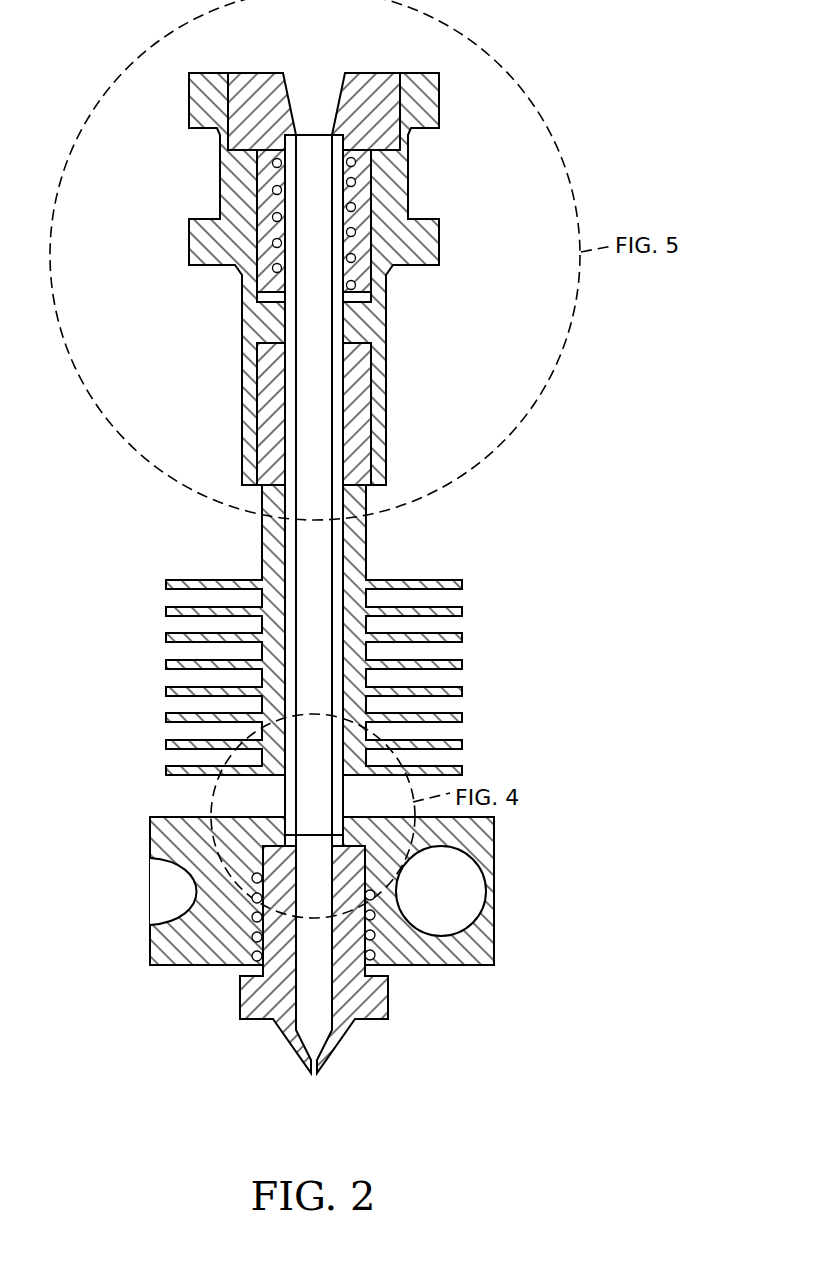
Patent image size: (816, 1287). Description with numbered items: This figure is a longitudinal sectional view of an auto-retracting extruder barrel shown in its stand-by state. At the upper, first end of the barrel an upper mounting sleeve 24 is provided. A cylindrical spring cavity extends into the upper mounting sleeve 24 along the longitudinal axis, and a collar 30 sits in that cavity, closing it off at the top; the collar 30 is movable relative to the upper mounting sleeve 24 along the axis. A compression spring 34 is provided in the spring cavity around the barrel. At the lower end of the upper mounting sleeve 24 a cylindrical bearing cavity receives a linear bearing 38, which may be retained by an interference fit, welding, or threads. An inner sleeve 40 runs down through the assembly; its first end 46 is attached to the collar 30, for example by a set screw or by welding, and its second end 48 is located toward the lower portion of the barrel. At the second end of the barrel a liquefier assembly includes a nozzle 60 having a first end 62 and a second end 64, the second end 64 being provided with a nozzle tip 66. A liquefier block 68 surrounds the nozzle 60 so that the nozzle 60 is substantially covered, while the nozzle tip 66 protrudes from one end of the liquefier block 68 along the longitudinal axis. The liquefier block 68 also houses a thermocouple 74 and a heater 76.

The upper mounting sleeve 24 is at (417, 85).
The collar 30 is at (262, 82).
The compression spring 34 is at (277, 217).
The linear bearing 38 is at (273, 371).
The inner sleeve 40 is at (310, 548).
The first end of the inner sleeve 46 is at (308, 58).
The second end of the inner sleeve 48 is at (437, 838).
The nozzle 60 is at (315, 1013).
The first end of the nozzle 62 is at (447, 846).
The second end of the nozzle 64 is at (375, 1058).
The nozzle tip 66 is at (297, 1048).
The liquefier block 68 is at (167, 938).
The thermocouple 74 is at (172, 888).
The heater 76 is at (440, 896).